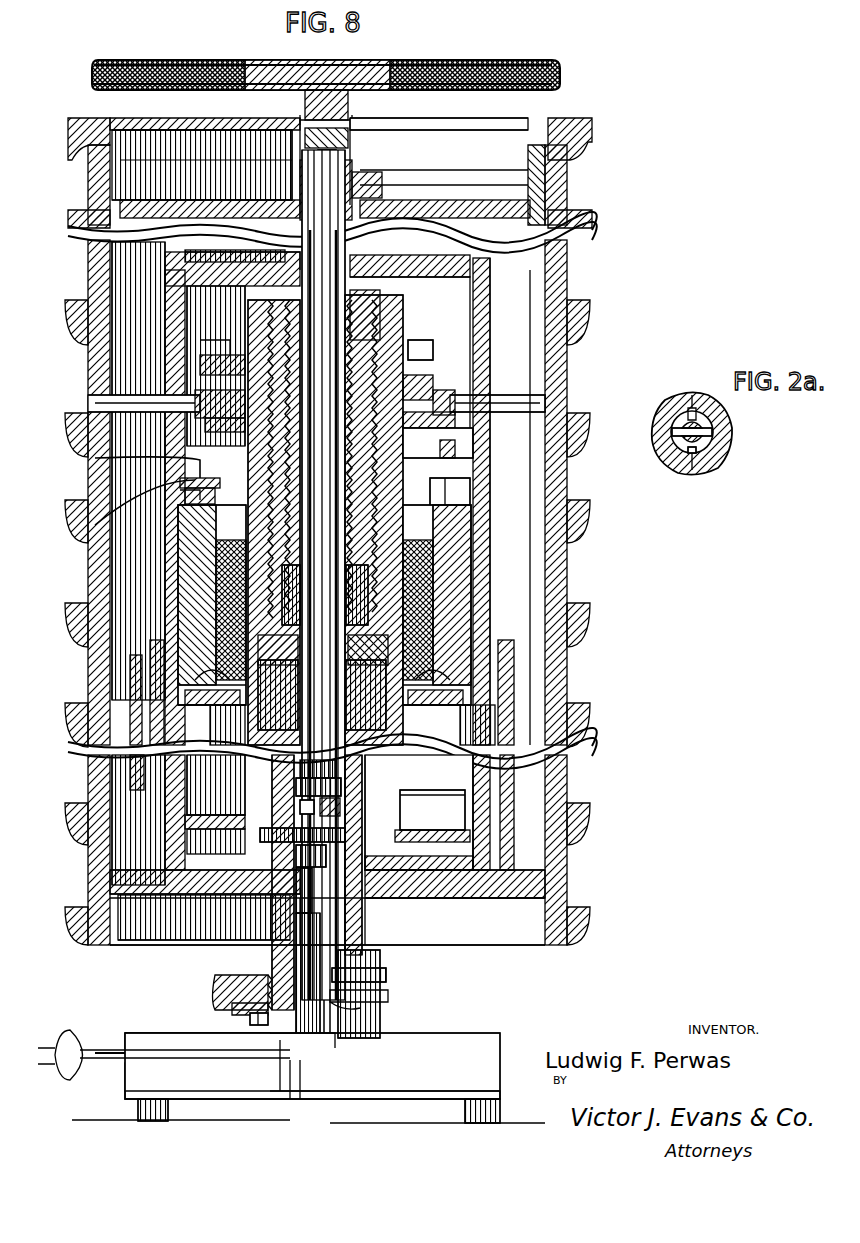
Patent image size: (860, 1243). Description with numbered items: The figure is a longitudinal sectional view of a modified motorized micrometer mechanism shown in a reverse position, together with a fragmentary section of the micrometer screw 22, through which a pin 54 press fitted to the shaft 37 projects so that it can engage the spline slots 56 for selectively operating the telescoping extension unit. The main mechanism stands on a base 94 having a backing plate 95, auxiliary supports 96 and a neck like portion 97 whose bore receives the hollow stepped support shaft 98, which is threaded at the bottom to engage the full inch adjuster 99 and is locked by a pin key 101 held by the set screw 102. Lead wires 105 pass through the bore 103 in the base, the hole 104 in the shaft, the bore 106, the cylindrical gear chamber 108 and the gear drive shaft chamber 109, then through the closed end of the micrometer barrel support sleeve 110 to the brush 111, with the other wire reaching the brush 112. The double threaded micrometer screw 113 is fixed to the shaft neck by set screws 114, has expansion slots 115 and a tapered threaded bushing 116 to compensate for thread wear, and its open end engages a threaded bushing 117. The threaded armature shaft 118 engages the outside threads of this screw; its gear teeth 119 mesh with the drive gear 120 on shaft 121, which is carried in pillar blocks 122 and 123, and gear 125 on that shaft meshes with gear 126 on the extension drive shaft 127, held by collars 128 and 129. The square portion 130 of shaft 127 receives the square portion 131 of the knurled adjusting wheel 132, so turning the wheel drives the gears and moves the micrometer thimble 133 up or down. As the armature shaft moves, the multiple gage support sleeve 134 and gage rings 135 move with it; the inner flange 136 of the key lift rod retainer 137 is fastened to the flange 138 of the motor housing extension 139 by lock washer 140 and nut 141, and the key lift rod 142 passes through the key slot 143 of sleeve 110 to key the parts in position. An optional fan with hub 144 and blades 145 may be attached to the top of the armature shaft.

In FIG. 8, the knurled adjusting wheel 132 is at (548, 72).
In FIG. 8, the elongated rectangular square portion 131 is at (340, 106).
In FIG. 8, the elongated rectangular square portion 130 is at (345, 138).
In FIG. 8, the collar 129 is at (345, 158).
In FIG. 8, the collar 128 is at (345, 178).
In FIG. 8, the micrometer barrel support sleeve 110 is at (165, 290).
In FIG. 8, the key lift rod retainer 137 is at (210, 378).
In FIG. 8, the inner flange 136 is at (215, 390).
In FIG. 8, the key lift rod 142 is at (100, 410).
In FIG. 8, the flange 138 is at (205, 425).
In FIG. 8, the lead wires 105 is at (180, 458).
In FIG. 8, the key slot 143 is at (185, 488).
In FIG. 8, the motor housing extension 139 is at (165, 525).
In FIG. 8, the brush 111 is at (200, 540).
In FIG. 8, the tapered threaded bushing 116 is at (365, 464).
In FIG. 8, the gear drive shaft chamber 109 is at (338, 246).
In FIG. 8, the threaded bushing 117 is at (362, 270).
In FIG. 8, the hub 144 is at (405, 330).
In FIG. 8, the blades 145 is at (420, 348).
In FIG. 8, the nut 141 is at (425, 385).
In FIG. 8, the lock washer 140 is at (440, 398).
In FIG. 8, the brush 112 is at (465, 500).
In FIG. 8, the armature shaft 118 is at (430, 560).
In FIG. 8, the expansion slots 115 is at (368, 580).
In FIG. 8, the double threaded micrometer screw 113 is at (385, 645).
In FIG. 8, the set screws 114 is at (385, 672).
In FIG. 8, the gage rings 135 is at (550, 592).
In FIG. 8, the micrometer thimble 133 is at (514, 688).
In FIG. 8, the multiple gage support sleeve 134 is at (535, 768).
In FIG. 8, the cylindrical gear chamber 108 is at (348, 920).
In FIG. 8, the gear teeth 119 is at (340, 768).
In FIG. 8, the gear 126 is at (345, 786).
In FIG. 8, the gear 125 is at (345, 800).
In FIG. 8, the extension drive shaft 127 is at (345, 814).
In FIG. 8, the pillar block 123 is at (345, 836).
In FIG. 8, the drive gear 120 is at (395, 836).
In FIG. 8, the pillar block 122 is at (322, 858).
In FIG. 8, the shaft 121 is at (312, 886).
In FIG. 8, the hollow stepped support shaft 98 is at (362, 940).
In FIG. 8, the bore 106 is at (300, 964).
In FIG. 8, the full inch adjuster 99 is at (235, 980).
In FIG. 8, the pin key 101 is at (245, 1008).
In FIG. 8, the set screw 102 is at (252, 1018).
In FIG. 8, the bore 103 is at (155, 1050).
In FIG. 8, the base 94 is at (478, 1052).
In FIG. 8, the neck like portion 97 is at (382, 1022).
In FIG. 8, the backing plate 95 is at (500, 1096).
In FIG. 8, the hole 104 is at (300, 1095).
In FIG. 8, the auxiliary supports 96 is at (468, 1112).
In FIG. 2a, the micrometer screw 22 is at (655, 455).
In FIG. 2a, the pin 54 is at (710, 432).
In FIG. 2a, the shaft 37 is at (706, 448).
In FIG. 2a, the spline slots 56 is at (698, 400).